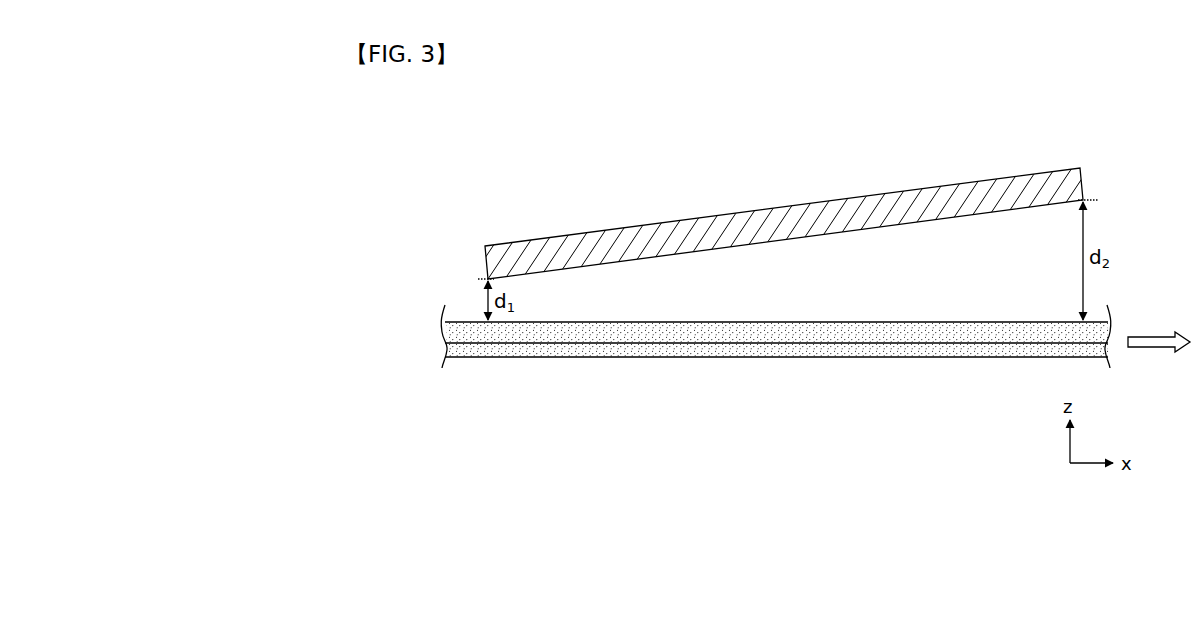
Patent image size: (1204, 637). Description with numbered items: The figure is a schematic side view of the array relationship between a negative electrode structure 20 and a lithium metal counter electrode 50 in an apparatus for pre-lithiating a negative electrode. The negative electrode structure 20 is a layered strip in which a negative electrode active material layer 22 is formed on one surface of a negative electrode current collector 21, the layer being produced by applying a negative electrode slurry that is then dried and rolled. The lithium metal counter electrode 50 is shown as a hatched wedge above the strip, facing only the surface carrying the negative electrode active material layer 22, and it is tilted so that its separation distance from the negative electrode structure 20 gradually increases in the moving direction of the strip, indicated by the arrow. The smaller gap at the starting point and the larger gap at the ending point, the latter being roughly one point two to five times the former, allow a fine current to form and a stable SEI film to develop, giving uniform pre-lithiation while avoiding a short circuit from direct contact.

The lithium metal counter electrode 50 is at (797, 203).
The negative electrode structure 20 is at (776, 404).
The negative electrode current collector 21 is at (903, 350).
The negative electrode active material layer 22 is at (813, 332).